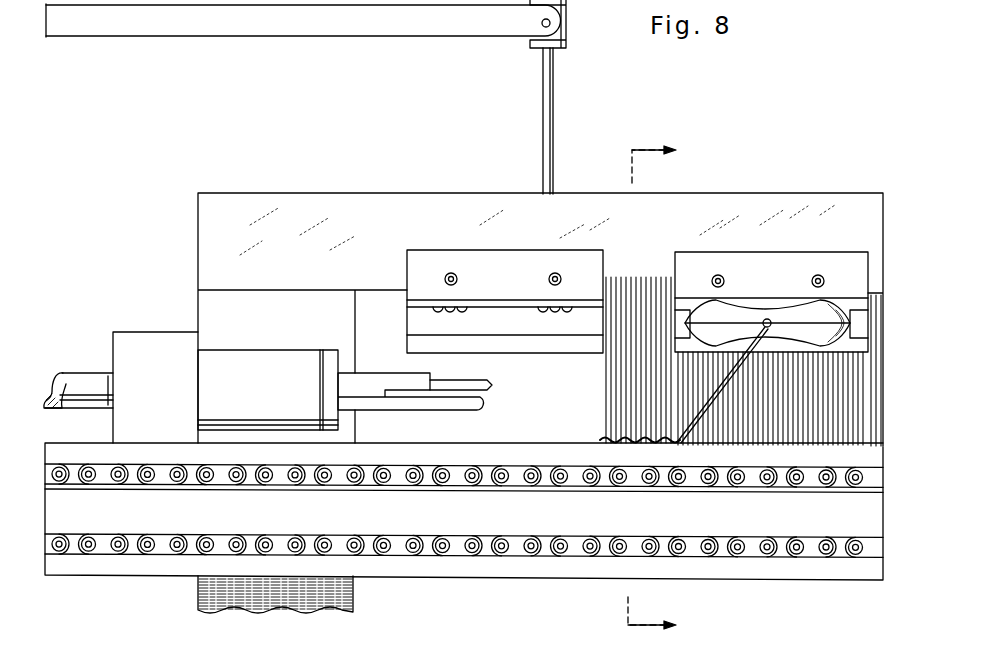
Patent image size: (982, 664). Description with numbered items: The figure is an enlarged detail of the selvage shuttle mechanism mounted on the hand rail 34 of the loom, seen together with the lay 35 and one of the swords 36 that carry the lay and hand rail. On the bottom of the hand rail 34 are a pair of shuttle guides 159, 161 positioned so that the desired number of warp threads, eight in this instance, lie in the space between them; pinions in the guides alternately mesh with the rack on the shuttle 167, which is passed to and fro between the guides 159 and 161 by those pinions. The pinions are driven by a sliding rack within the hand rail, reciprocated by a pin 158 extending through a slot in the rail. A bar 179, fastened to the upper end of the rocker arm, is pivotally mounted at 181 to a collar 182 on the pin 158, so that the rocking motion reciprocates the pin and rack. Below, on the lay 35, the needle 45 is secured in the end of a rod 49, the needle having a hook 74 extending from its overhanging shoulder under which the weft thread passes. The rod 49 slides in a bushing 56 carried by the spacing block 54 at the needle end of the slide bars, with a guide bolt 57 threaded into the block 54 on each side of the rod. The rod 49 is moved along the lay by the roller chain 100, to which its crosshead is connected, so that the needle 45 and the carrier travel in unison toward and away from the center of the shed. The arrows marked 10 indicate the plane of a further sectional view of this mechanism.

The section line 10- 10 is at (669, 389).
The hand rail 34 is at (328, 202).
The lay 35 is at (532, 573).
The swords 36 is at (356, 599).
The needle 45 is at (418, 407).
The rod 49 is at (88, 408).
The spacing block 54 is at (192, 363).
The bushing 56 is at (326, 356).
The guide bolt 57 is at (53, 374).
The hook 74 is at (482, 390).
The roller chain 100 is at (401, 478).
The pin 158 is at (554, 128).
The shuttle guide 159 is at (505, 301).
The shuttle guide 161 is at (771, 302).
The shuttle 167 is at (822, 305).
The bar 179 is at (350, 37).
The pivot 181 is at (556, 22).
The collar 182 is at (567, 42).